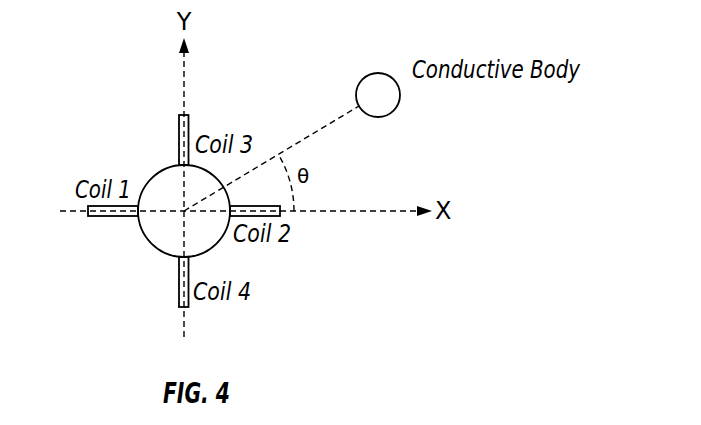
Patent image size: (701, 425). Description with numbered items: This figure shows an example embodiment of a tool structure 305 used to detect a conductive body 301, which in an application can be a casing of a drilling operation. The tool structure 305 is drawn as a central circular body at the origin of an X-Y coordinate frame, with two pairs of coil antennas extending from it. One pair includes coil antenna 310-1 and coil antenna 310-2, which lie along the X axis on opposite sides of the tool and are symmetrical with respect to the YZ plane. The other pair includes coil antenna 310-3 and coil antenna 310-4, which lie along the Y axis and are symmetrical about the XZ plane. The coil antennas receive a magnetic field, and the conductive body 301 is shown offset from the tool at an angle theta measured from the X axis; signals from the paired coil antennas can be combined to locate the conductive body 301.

The conductive body 301 is at (375, 73).
The tool structure 305 is at (166, 170).
The coil antenna 310-1 is at (113, 217).
The coil antenna 310-2 is at (283, 216).
The coil antenna 310-3 is at (179, 140).
The coil antenna 310-4 is at (179, 283).